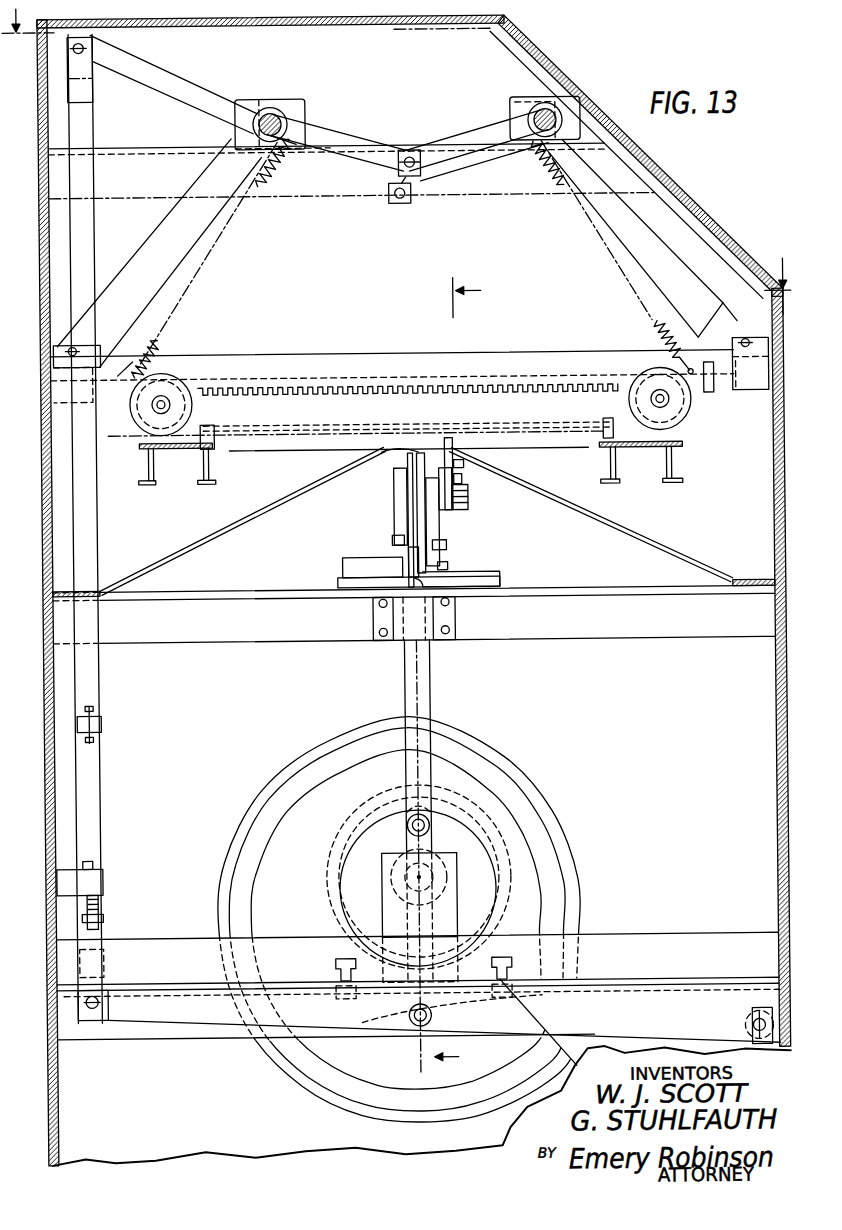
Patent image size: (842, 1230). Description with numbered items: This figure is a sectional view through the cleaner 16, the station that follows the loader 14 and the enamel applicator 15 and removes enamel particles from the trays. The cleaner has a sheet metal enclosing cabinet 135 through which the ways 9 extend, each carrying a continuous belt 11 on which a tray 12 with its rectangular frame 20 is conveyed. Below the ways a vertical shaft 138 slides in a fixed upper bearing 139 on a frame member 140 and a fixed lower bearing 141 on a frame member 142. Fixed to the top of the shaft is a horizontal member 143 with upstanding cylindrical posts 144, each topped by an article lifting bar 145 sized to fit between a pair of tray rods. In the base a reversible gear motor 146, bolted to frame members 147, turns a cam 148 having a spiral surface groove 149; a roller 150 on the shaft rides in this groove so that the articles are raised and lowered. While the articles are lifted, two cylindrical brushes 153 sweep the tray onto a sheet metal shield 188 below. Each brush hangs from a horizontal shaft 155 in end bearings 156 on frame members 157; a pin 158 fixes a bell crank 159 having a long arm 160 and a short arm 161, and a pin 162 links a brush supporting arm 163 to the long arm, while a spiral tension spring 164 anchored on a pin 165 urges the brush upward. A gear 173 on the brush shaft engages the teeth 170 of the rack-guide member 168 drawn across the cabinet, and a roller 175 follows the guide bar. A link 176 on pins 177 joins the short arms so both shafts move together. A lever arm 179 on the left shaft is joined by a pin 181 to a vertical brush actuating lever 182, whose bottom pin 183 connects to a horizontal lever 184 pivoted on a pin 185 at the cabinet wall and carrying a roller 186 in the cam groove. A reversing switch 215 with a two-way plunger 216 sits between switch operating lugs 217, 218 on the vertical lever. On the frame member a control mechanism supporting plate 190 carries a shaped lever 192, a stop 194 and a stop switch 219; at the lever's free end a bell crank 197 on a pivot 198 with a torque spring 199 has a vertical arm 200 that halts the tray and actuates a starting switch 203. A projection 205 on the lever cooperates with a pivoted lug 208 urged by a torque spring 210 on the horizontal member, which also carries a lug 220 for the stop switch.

The ways 9 is at (203, 482).
The continuous belt 11 is at (140, 447).
The tray 12 is at (290, 423).
The loader 14 is at (451, 676).
The enamel applicator 15 is at (400, 161).
The cleaner 16 is at (709, 201).
The tray frame 20 is at (146, 433).
The enclosing cabinet 135 is at (775, 528).
The vertical shaft 138 is at (432, 697).
The upper bearing 139 is at (441, 645).
The frame member 140 is at (586, 630).
The lower bearing 141 is at (380, 877).
The frame member 142 is at (276, 950).
The horizontal member 143 is at (404, 552).
The cylindrical posts 144 is at (409, 462).
The article lifting bar 145 is at (306, 455).
The reversible gear motor 146 is at (515, 890).
The frame members 147 is at (595, 990).
The cam 148 is at (563, 818).
The surface groove 149 is at (525, 782).
The roller 150 is at (429, 810).
The cylindrical brushes 153 is at (179, 378).
The horizontal shaft 155 is at (274, 107).
The end bearings 156 is at (310, 115).
The frame members 157 is at (302, 195).
The pin 158 is at (302, 103).
The bell crank 159 is at (463, 130).
The long arm 160 is at (166, 237).
The short arm 161 is at (340, 176).
The pin 162 is at (82, 346).
The brush supporting arm 163 is at (122, 370).
The spiral tension spring 164 is at (233, 258).
The pin 165 is at (321, 141).
The cross member 168 is at (326, 352).
The teeth 170 is at (380, 386).
The gear 173 is at (196, 405).
The roller 175 is at (175, 396).
The link 176 is at (426, 170).
The pins 177 is at (416, 198).
The lever arm 179 is at (200, 82).
The pin 181 is at (97, 44).
The vertical brush actuating lever 182 is at (90, 532).
The pin 183 is at (90, 1020).
The horizontal lever 184 is at (165, 1022).
The pin 185 is at (755, 1012).
The roller 186 is at (405, 1014).
The sheet metal shield 188 is at (578, 522).
The control mechanism supporting plate 190 is at (501, 582).
The shaped lever 192 is at (433, 507).
The stop 194 is at (427, 472).
The bell crank 197 is at (463, 478).
The pivot 198 is at (441, 508).
The torque spring 199 is at (463, 505).
The vertical arm 200 is at (450, 438).
The starting switch 203 is at (467, 463).
The projection 205 is at (441, 547).
The pivoted lug 208 is at (449, 590).
The torque spring 210 is at (440, 561).
The reversing switch 215 is at (92, 886).
The two-way plunger 216 is at (99, 864).
The switch operating lug 217 is at (101, 732).
The switch operating lug 218 is at (97, 902).
The stop switch 219 is at (353, 570).
The lug 220 is at (397, 540).